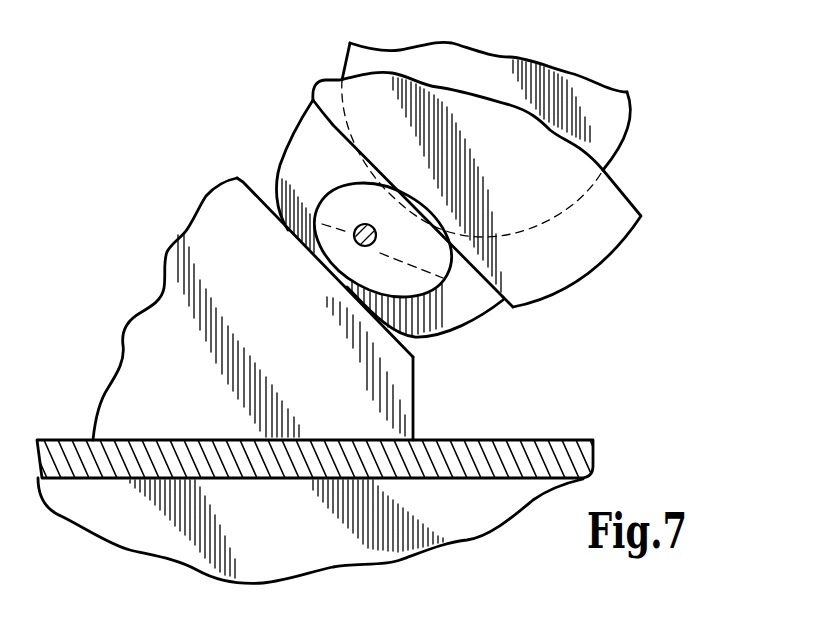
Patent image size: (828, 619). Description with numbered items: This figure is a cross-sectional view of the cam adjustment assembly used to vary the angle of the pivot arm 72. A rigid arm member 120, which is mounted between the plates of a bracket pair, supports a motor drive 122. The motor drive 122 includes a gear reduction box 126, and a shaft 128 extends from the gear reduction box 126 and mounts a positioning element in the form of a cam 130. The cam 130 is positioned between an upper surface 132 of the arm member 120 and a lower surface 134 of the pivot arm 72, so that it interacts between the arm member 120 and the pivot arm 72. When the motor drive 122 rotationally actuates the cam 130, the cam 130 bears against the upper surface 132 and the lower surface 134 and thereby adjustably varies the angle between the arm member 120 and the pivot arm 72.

The pivot arm 72 is at (577, 260).
The rigid arm member 120 is at (315, 351).
The motor drive 122 is at (604, 132).
The gear reduction box 126 is at (420, 327).
The shaft 128 is at (362, 246).
The cam 130 is at (348, 198).
The upper surface 132 is at (254, 183).
The lower surface 134 is at (507, 308).